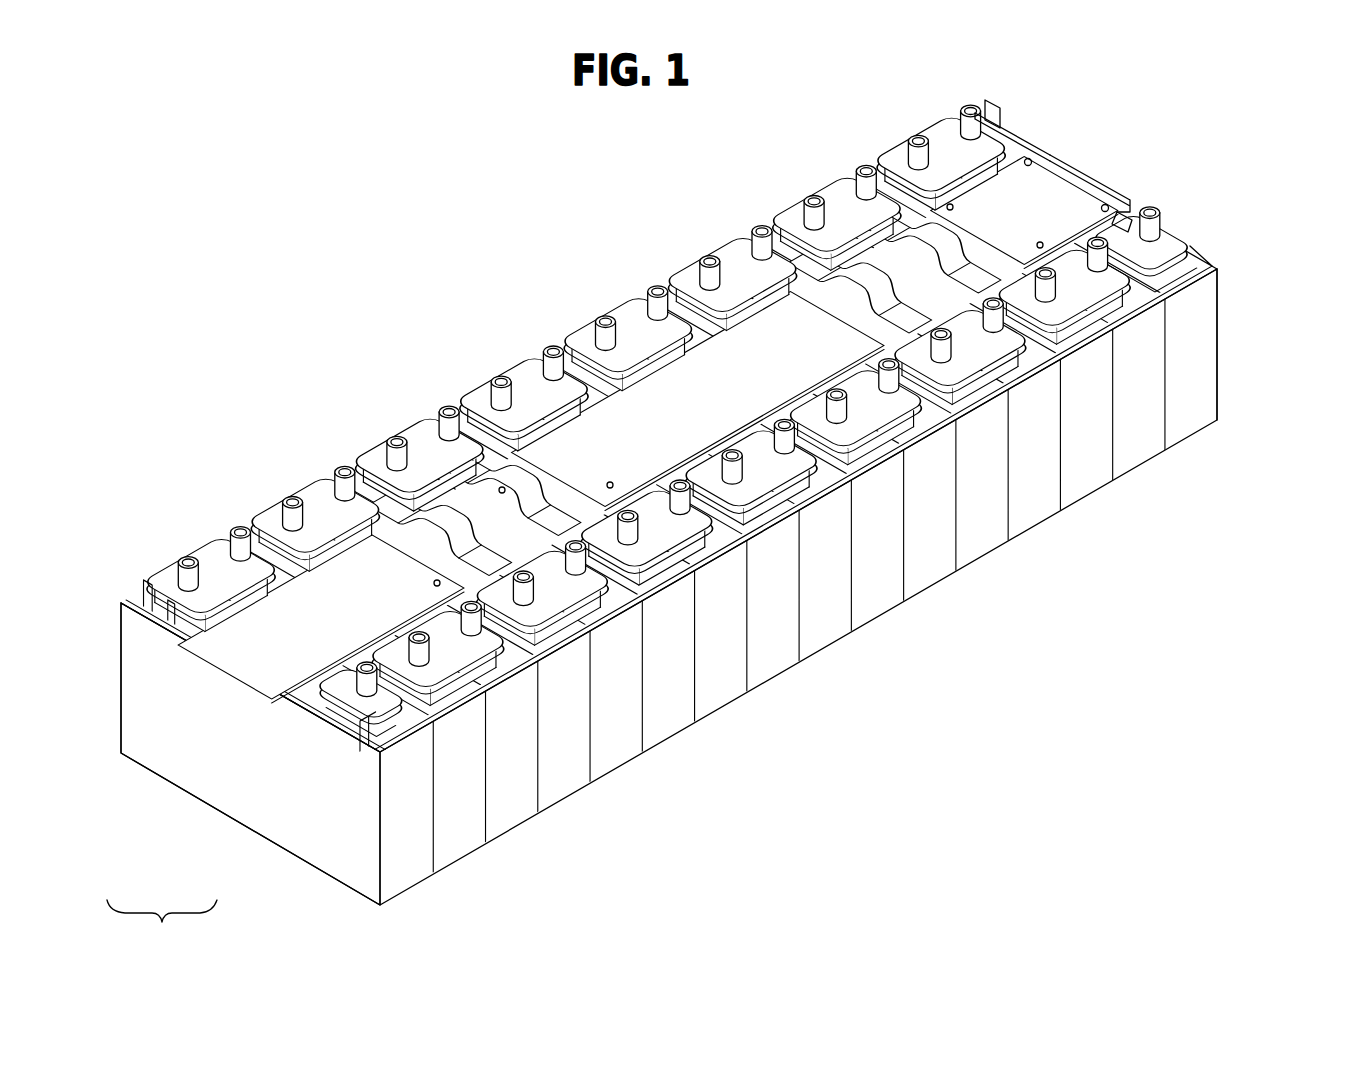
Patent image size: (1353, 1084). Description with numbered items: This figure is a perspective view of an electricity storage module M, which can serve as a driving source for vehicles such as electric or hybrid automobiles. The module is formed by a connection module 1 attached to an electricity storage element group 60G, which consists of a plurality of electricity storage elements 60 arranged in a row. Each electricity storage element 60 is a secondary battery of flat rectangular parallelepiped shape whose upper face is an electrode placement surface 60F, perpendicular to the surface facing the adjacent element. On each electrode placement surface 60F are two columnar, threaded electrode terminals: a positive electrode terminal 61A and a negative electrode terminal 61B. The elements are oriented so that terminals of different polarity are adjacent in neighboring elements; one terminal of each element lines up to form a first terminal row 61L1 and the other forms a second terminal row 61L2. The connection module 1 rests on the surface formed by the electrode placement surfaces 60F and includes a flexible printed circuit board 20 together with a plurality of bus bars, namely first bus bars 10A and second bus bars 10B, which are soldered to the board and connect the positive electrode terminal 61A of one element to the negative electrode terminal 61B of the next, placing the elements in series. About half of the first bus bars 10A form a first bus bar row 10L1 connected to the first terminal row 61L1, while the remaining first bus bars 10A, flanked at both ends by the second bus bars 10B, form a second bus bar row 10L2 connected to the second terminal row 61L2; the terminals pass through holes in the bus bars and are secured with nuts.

The connection module 1 is at (217, 682).
The first bus bar 10A is at (735, 252).
The second bus bar 10B is at (383, 695).
The first bus bar row 10L1 is at (1030, 124).
The second bus bar row 10L2 is at (1197, 217).
The flexible printed circuit board 20 is at (655, 410).
The electricity storage element 60 is at (1190, 418).
The electrode placement surface 60F is at (1197, 263).
The electricity storage element group 60G is at (222, 830).
The positive electrode terminal 61A is at (918, 135).
The negative electrode terminal 61B is at (970, 105).
The first terminal row 61L1 is at (990, 104).
The second terminal row 61L2 is at (1172, 192).
The electricity storage module M is at (162, 927).